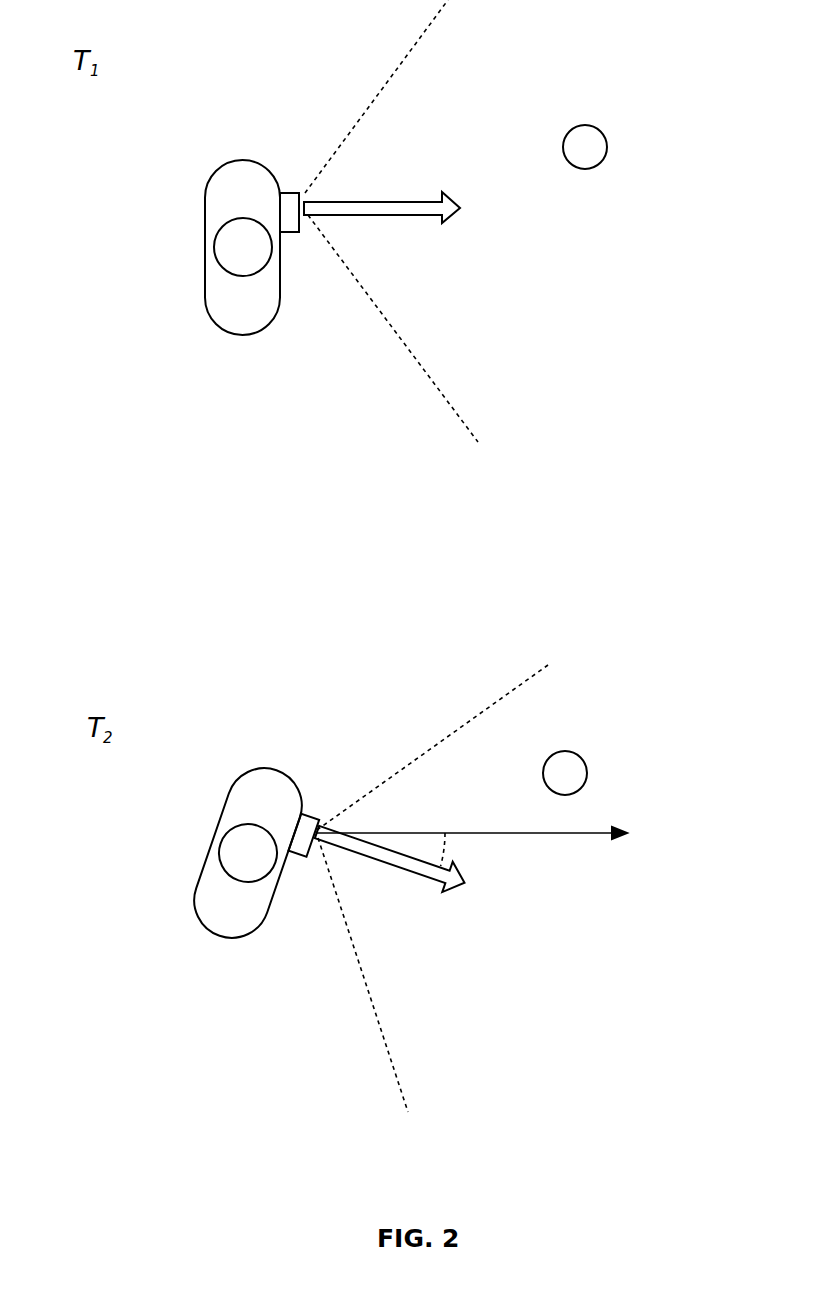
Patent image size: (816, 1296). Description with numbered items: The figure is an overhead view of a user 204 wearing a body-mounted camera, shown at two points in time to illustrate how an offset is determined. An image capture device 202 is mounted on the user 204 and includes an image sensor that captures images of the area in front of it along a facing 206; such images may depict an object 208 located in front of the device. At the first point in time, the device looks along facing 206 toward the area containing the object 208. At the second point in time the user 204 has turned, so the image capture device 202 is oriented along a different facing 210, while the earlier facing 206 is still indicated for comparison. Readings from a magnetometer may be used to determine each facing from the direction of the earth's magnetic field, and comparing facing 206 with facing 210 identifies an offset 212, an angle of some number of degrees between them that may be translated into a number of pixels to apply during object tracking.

The image capture device 202 is at (305, 811).
The user 204 is at (165, 870).
The facing 206 is at (506, 529).
The object 208 is at (602, 437).
The facing 210 is at (391, 872).
The offset 212 is at (448, 850).